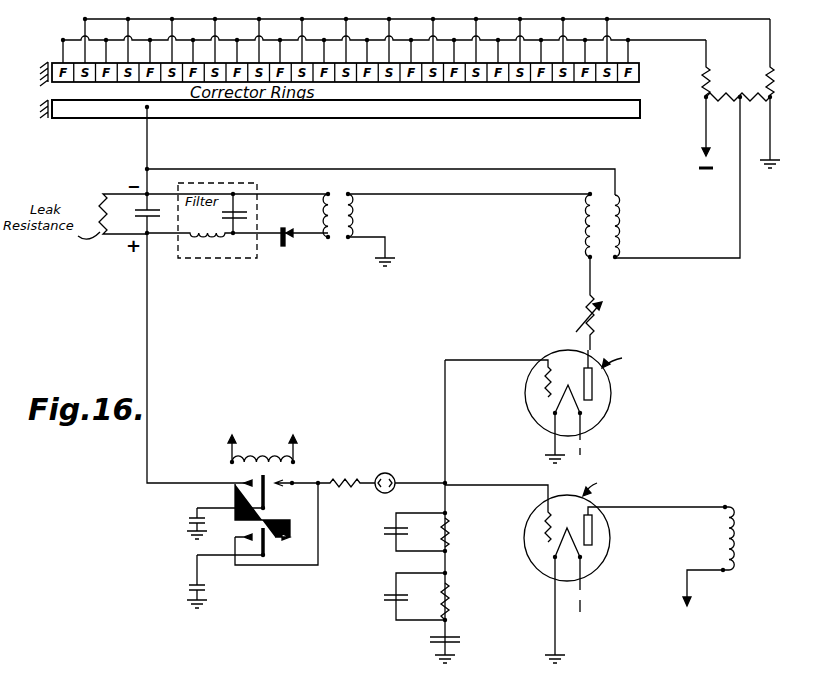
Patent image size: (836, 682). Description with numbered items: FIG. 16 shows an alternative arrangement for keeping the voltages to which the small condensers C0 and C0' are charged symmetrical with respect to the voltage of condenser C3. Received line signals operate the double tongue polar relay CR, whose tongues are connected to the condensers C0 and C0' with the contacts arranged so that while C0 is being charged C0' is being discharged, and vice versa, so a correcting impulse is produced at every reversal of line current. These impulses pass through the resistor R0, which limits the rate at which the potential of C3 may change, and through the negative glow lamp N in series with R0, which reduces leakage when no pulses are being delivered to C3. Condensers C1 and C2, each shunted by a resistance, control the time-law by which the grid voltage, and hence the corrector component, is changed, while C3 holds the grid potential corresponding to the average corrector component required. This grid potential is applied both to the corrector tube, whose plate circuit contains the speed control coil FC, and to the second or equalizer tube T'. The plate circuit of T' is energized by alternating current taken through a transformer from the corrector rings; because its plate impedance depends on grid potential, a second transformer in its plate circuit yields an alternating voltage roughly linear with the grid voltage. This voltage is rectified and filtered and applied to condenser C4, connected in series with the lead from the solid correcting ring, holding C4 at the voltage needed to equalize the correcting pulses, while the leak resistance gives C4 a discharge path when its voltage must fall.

The condenser C4 is at (134, 209).
The double tongue polar relay CR is at (258, 482).
The condenser C0 is at (179, 523).
The condenser C0' is at (179, 581).
The condenser C1 is at (385, 525).
The condenser C2 is at (386, 594).
The condenser C3 is at (464, 639).
The resistor R0 is at (346, 471).
The negative glow lamp N is at (410, 472).
The second tube T' is at (585, 506).
The speed control coil FC is at (735, 538).